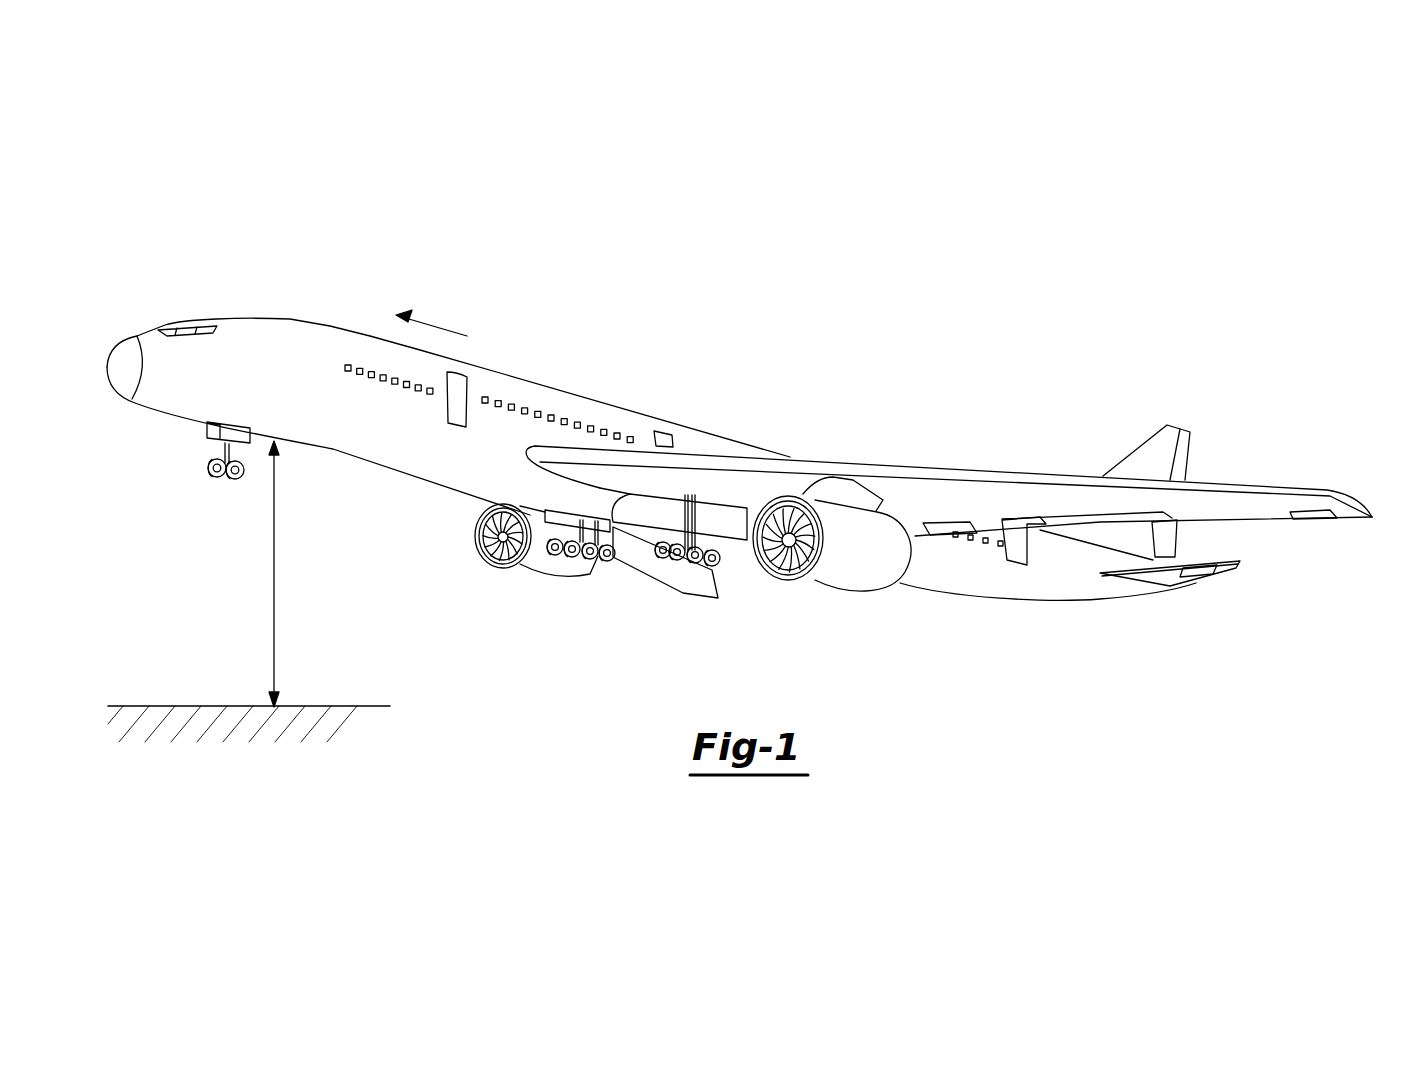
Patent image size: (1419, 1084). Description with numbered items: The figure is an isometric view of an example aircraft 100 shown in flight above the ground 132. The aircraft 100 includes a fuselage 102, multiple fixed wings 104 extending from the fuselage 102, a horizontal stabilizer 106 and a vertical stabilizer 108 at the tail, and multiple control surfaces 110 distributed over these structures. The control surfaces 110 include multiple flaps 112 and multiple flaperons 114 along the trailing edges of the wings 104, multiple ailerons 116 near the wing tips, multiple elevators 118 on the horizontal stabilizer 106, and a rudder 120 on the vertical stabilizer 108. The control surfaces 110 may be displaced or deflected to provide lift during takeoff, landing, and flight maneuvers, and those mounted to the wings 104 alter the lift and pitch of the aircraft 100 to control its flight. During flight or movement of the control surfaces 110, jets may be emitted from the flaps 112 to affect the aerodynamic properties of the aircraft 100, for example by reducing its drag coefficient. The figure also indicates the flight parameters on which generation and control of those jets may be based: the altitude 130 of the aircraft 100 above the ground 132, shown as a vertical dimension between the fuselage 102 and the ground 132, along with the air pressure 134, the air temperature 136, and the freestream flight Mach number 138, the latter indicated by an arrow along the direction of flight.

The aircraft 100 is at (753, 438).
The fuselage 102 is at (278, 317).
The wings 104 is at (868, 457).
The horizontal stabilizer 106 is at (1223, 557).
The vertical stabilizer 108 is at (1133, 448).
The control surfaces 110 is at (1149, 542).
The flaps 112 is at (1042, 528).
The flaperons 114 is at (943, 532).
The ailerons 116 is at (1322, 518).
The elevators 118 is at (1197, 575).
The rudder 120 is at (1193, 449).
The altitude 130 is at (274, 603).
The ground 132 is at (262, 790).
The air pressure 134 is at (365, 535).
The air temperature 136 is at (365, 578).
The freestream flight Mach number 138 is at (440, 328).